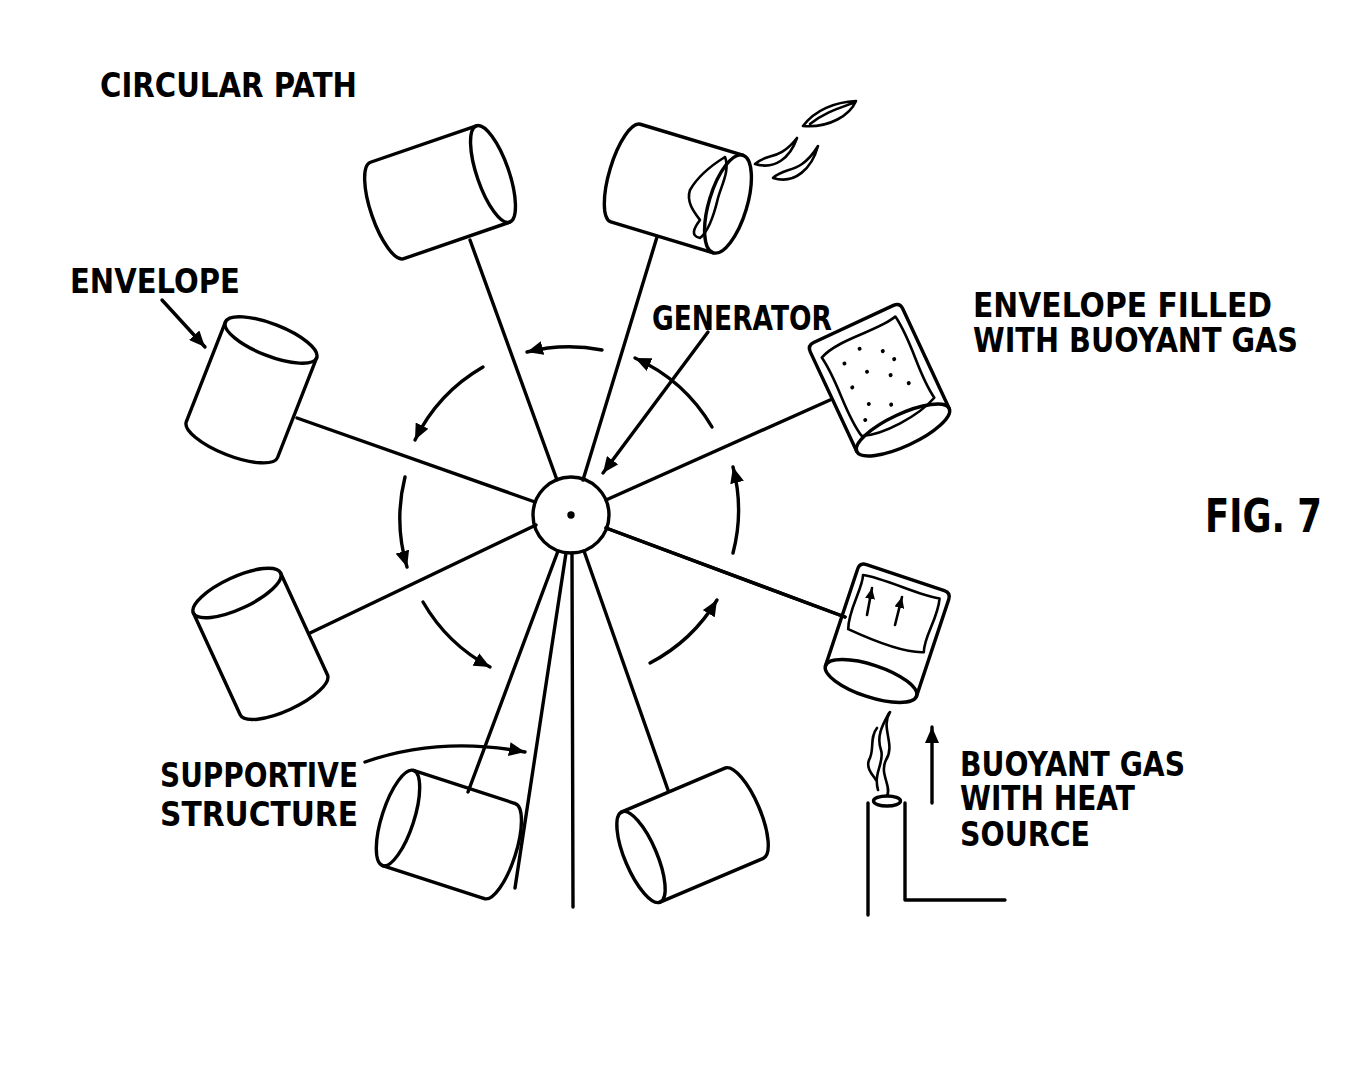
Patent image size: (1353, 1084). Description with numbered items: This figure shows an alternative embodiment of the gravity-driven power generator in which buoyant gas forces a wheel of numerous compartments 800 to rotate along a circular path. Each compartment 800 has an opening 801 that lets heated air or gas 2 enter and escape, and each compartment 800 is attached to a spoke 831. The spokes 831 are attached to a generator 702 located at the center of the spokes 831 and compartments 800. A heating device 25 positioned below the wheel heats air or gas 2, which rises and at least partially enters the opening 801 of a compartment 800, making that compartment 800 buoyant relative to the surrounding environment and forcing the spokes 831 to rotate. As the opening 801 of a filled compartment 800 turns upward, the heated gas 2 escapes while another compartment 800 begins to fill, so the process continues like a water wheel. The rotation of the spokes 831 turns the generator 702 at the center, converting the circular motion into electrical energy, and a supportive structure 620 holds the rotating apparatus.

The opening 801 is at (483, 168).
The heated air or gas 2 is at (823, 155).
The generator 702 is at (609, 517).
The spoke 831 is at (760, 593).
The compartment 800 is at (942, 648).
The heating device 25 is at (873, 798).
The supportive structure column 620 is at (577, 878).